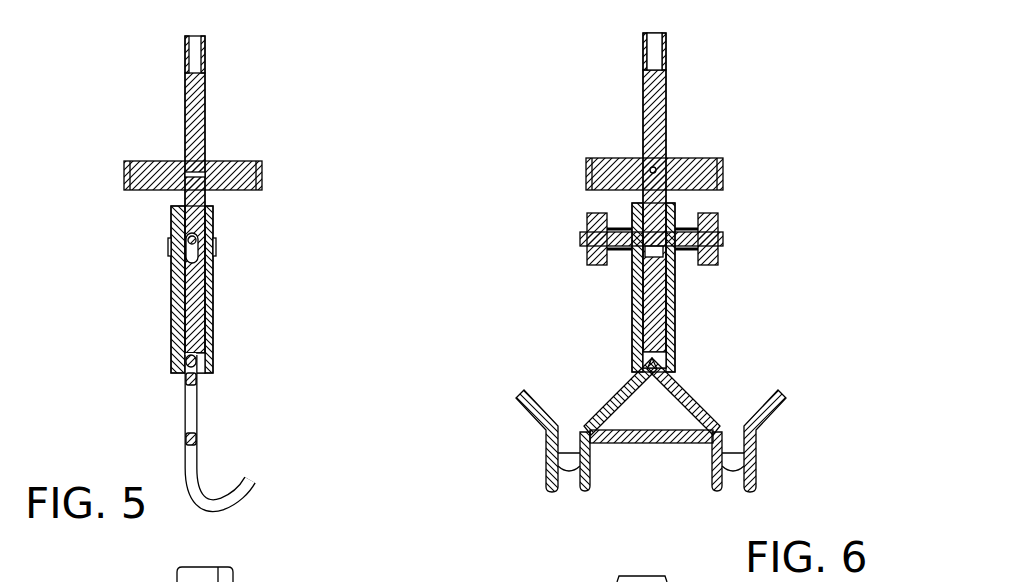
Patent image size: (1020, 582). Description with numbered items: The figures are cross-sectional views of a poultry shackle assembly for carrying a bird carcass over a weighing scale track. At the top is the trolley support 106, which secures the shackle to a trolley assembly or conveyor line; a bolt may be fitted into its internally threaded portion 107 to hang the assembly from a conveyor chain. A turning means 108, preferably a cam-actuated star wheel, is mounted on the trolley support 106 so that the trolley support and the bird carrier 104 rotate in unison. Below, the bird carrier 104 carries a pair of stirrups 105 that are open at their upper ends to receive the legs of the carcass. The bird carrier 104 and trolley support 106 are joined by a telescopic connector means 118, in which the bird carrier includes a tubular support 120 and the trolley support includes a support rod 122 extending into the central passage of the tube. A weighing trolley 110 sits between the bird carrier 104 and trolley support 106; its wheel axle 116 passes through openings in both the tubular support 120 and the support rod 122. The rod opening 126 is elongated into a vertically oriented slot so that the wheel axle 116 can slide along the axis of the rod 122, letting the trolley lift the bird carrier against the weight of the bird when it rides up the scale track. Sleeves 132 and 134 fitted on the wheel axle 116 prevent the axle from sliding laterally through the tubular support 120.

In FIG. 6, the bird carrier 104 is at (470, 418).
In FIG. 5, the stirrups 105 is at (235, 492).
In FIG. 6, the stirrups 105 is at (748, 493).
In FIG. 5, the trolley support 106 is at (212, 106).
In FIG. 6, the trolley support 106 is at (677, 103).
In FIG. 6, the internally threaded portion 107 is at (656, 33).
In FIG. 5, the turning means 108 is at (148, 158).
In FIG. 6, the turning means 108 is at (720, 158).
In FIG. 5, the weighing trolley 110 is at (305, 243).
In FIG. 5, the wheel axle 116 is at (213, 228).
In FIG. 6, the wheel axle 116 is at (728, 240).
In FIG. 5, the telescopic connector means 118 is at (120, 279).
In FIG. 6, the telescopic connector means 118 is at (710, 303).
In FIG. 5, the tubular support 120 is at (214, 272).
In FIG. 6, the tubular support 120 is at (628, 296).
In FIG. 5, the support rod 122 is at (213, 300).
In FIG. 6, the support rod 122 is at (630, 335).
In FIG. 5, the rod opening 126 is at (170, 290).
In FIG. 6, the rod opening 126 is at (632, 262).
In FIG. 6, the sleeve 132 is at (617, 230).
In FIG. 6, the sleeve 134 is at (680, 228).